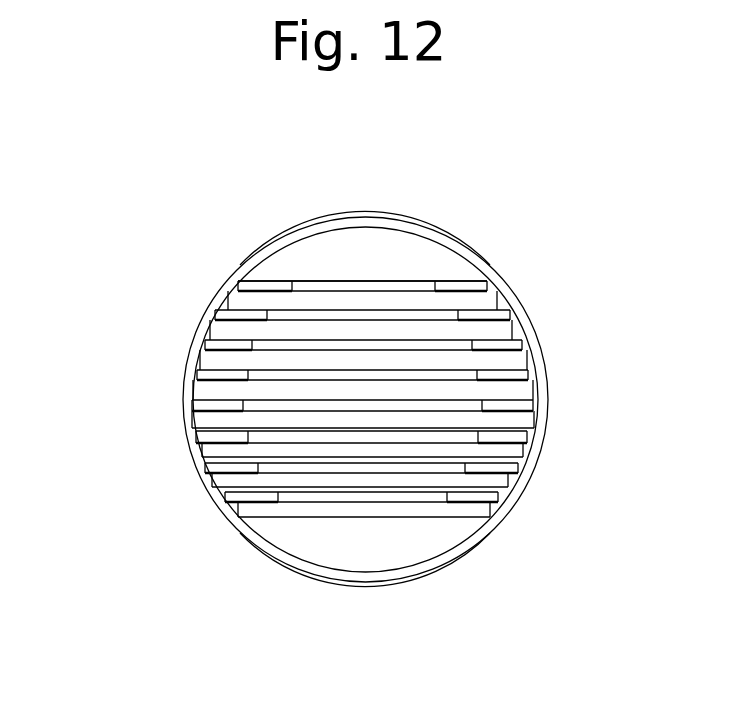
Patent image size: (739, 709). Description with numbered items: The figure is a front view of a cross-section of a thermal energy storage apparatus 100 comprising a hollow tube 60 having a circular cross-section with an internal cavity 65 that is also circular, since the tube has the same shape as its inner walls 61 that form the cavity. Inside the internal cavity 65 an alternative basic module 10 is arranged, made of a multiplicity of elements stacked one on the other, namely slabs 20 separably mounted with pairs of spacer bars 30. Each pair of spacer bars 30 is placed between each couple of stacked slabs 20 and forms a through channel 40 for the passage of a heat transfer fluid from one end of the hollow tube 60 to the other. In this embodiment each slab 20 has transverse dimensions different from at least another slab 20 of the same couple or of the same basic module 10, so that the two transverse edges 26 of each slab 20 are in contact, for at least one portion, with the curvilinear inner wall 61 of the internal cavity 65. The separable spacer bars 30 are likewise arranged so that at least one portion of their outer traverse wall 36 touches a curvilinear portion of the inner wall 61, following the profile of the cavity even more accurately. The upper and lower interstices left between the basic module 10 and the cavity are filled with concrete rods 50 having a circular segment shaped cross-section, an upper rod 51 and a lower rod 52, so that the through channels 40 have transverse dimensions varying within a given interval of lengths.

The thermal energy storage apparatus 100 is at (336, 393).
The basic module 10 is at (350, 408).
The slab 20 is at (220, 287).
The spacer bar 30 is at (233, 272).
The through channel 40 is at (317, 287).
The concrete circular segment shaped rod 50 is at (365, 393).
The upper rod 51 is at (345, 254).
The lower rod 52 is at (372, 550).
The hollow tube 60 is at (309, 365).
The inner wall 61 is at (123, 213).
The internal cavity 65 is at (436, 240).
The transverse edge 26 is at (213, 481).
The outer traverse wall 36 is at (224, 497).